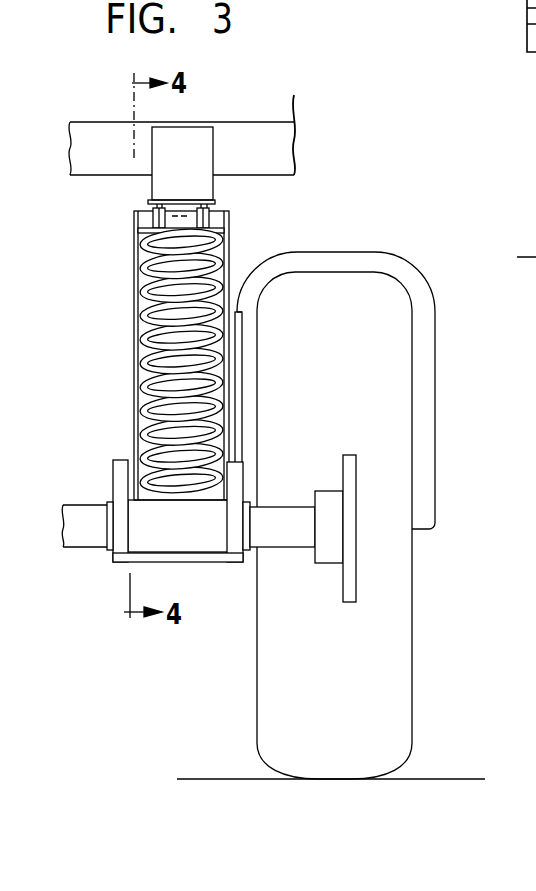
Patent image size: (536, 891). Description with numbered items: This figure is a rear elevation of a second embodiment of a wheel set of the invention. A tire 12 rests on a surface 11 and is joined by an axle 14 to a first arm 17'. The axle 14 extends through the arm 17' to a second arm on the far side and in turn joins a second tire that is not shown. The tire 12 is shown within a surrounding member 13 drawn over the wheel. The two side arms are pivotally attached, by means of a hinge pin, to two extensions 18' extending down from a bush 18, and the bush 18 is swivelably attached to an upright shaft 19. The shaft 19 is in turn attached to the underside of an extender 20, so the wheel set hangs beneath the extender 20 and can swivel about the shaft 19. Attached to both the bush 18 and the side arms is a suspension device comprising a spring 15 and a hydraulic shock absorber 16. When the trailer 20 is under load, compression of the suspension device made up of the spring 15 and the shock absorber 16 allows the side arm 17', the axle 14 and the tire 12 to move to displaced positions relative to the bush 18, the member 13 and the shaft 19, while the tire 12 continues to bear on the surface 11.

The surface 11 is at (441, 790).
The tire 12 is at (400, 670).
The wheel bracket 13 is at (430, 398).
The axle 14 is at (287, 533).
The spring 15 is at (149, 361).
The hydraulic shock absorber 16 is at (167, 322).
The first arm 17' is at (213, 510).
The bush 18 is at (216, 210).
The extension 18' is at (256, 429).
The upright shaft 19 is at (205, 152).
The extender 20 is at (275, 112).